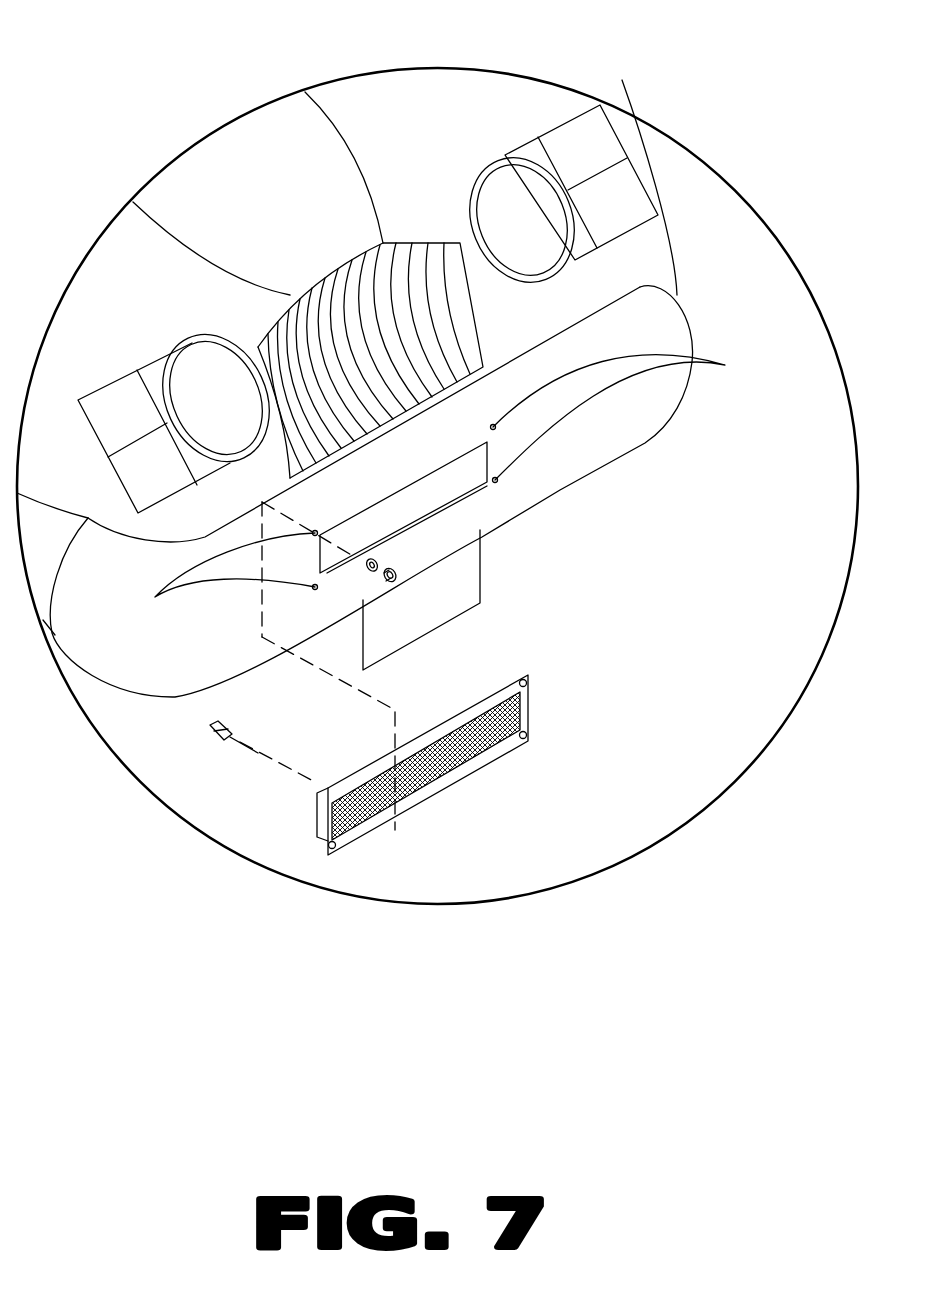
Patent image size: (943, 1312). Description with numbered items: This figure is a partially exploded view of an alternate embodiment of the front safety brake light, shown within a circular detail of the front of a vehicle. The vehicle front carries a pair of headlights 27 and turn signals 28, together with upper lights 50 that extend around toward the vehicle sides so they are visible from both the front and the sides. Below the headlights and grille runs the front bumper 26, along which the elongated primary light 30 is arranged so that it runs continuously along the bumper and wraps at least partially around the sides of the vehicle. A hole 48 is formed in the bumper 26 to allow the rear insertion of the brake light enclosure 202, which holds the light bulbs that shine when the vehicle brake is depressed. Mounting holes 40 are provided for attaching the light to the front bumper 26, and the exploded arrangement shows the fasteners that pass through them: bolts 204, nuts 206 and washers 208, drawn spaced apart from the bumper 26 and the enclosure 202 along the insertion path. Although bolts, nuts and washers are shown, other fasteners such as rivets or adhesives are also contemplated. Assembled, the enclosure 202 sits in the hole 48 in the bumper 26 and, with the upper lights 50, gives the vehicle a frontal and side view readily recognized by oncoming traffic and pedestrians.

The front bumper 26 is at (145, 677).
The headlights 27 is at (195, 370).
The turn signals 28 is at (118, 482).
The primary light 30 is at (459, 744).
The mounting holes 40 is at (725, 365).
The hole 48 is at (455, 482).
The upper lights 50 is at (110, 410).
The enclosure 202 is at (480, 770).
The bolts 204 is at (218, 740).
The nuts 206 is at (377, 558).
The washers 208 is at (387, 583).